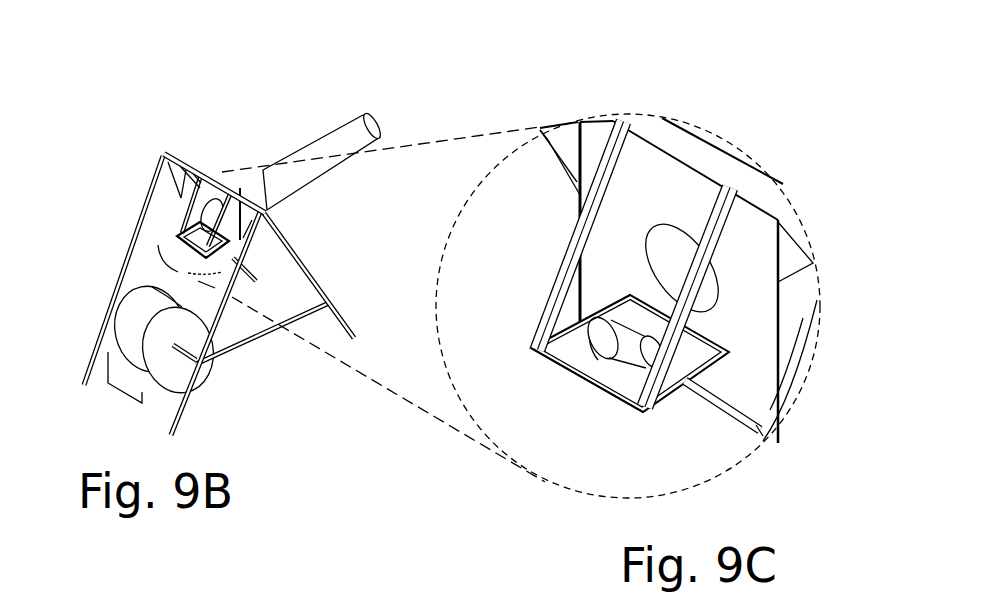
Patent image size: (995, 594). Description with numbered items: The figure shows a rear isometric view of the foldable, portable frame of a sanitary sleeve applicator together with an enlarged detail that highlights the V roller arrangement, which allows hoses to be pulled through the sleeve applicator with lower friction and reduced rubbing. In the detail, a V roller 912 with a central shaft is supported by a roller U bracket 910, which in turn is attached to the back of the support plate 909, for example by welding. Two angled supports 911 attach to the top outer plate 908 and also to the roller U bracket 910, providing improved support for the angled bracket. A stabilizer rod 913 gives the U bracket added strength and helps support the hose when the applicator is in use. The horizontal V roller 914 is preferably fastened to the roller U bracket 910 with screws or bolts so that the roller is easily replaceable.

The top outer plate 908 is at (713, 163).
The support plate 909 is at (748, 257).
The roller U bracket 910 is at (707, 367).
The angled supports 911 is at (722, 188).
The V roller 912 is at (572, 373).
The stabilizer rod 913 is at (606, 387).
The horizontal V roller 914 is at (583, 318).